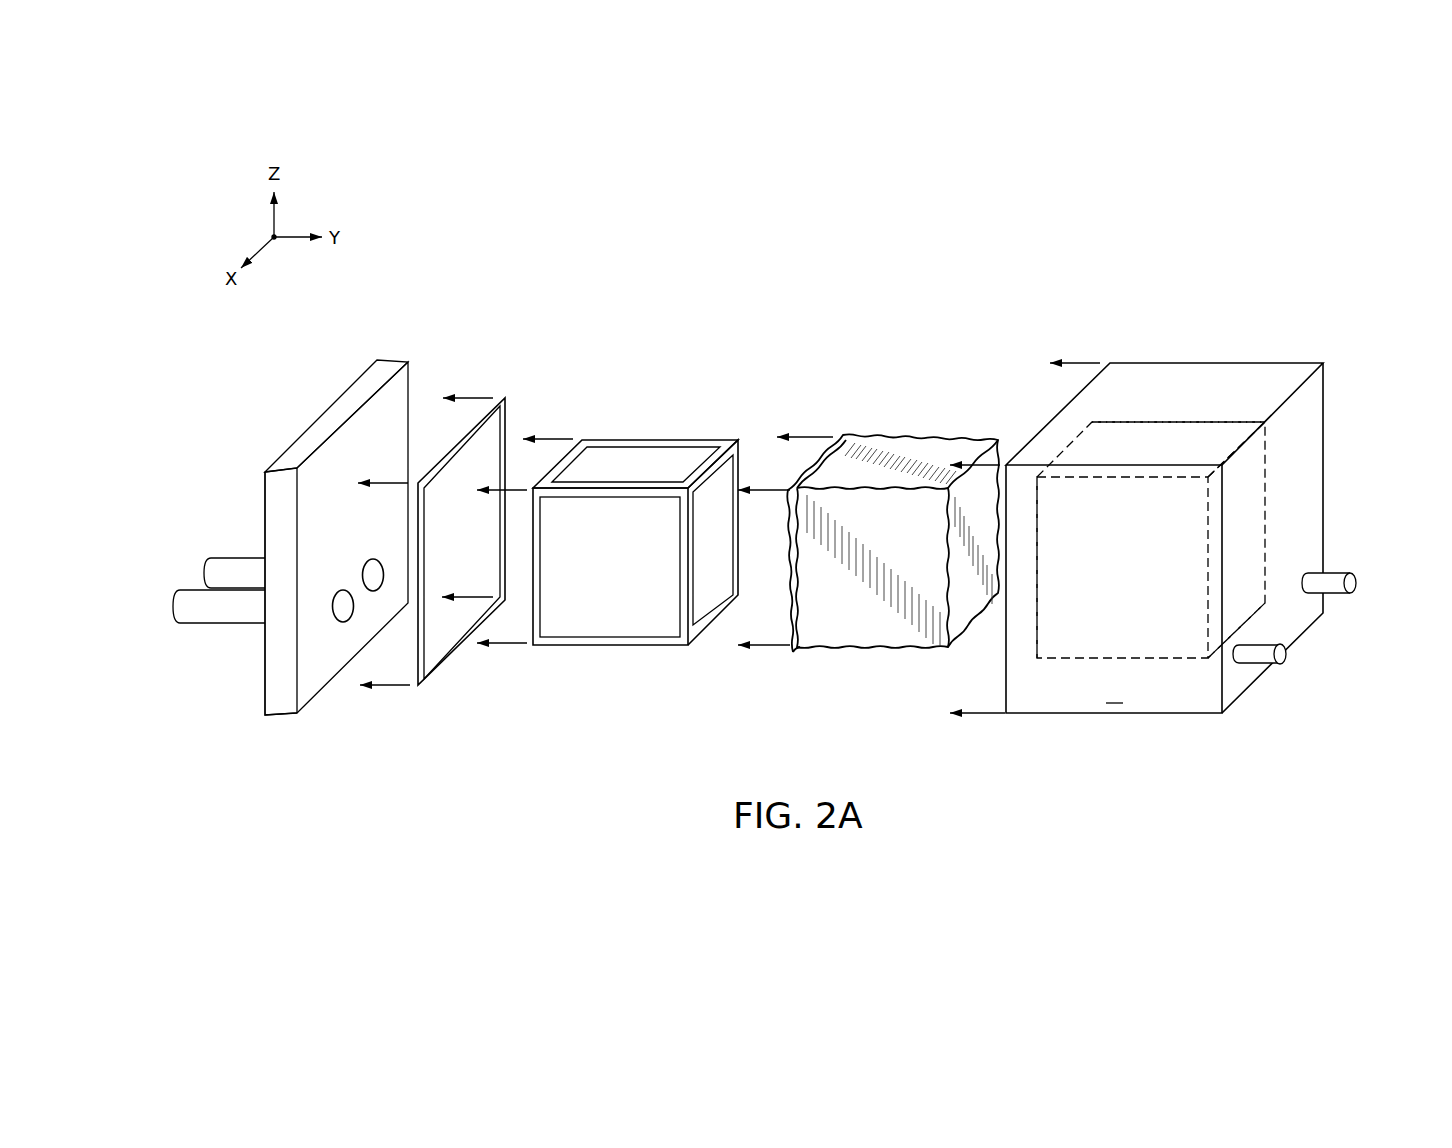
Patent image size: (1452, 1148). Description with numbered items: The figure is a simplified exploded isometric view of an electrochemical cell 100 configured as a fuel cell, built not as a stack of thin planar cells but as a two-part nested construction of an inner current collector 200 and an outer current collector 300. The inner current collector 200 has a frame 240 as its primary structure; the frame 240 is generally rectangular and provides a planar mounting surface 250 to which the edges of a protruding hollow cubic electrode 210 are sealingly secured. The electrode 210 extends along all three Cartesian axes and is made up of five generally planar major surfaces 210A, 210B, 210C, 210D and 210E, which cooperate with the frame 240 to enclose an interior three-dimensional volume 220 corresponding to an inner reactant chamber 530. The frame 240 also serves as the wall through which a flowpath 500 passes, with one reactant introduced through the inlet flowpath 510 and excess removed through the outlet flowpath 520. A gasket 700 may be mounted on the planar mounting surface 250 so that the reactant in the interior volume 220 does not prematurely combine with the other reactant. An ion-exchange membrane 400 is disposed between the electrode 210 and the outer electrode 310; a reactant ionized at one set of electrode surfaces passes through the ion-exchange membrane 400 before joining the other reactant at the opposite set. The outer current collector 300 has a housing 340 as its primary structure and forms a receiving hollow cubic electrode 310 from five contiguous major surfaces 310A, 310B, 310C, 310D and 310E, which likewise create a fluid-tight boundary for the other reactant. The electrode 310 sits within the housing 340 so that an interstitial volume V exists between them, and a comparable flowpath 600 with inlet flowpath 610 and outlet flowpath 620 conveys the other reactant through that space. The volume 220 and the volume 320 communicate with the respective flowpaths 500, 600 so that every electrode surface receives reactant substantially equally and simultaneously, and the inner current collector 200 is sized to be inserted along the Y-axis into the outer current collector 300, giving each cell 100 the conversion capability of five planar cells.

The electrochemical cell 100 is at (404, 254).
The inner current collector 200 is at (1000, 332).
The electrode 210 is at (663, 441).
The major surface of electrode 210A is at (637, 580).
The major surface of electrode 210B is at (657, 473).
The major surface of electrode 210C is at (743, 425).
The major surface of electrode 210D is at (618, 660).
The major surface of electrode 210E is at (703, 585).
The interior three-dimensional volume 220 is at (230, 476).
The inner reactant chamber 530 is at (295, 561).
The frame 240 is at (280, 712).
The planar mounting surface 250 is at (302, 681).
The gasket 700 is at (438, 668).
The ion-exchange membrane 400 is at (900, 438).
The flowpath 500 is at (181, 546).
The inlet flowpath 510 is at (219, 558).
The outlet flowpath 520 is at (216, 625).
The outer current collector 300 is at (1360, 351).
The electrode 310 is at (1087, 660).
The major surface of electrode 310A is at (1186, 641).
The major surface of electrode 310B is at (1165, 432).
The major surface of electrode 310C is at (1271, 463).
The major surface of electrode 310D is at (1268, 620).
The major surface of electrode 310E is at (1250, 510).
The volume 320 is at (1222, 432).
The housing 340 is at (1324, 613).
The flowpath 600 is at (1391, 506).
The inlet flowpath 610 is at (1355, 583).
The outlet flowpath 620 is at (1280, 665).